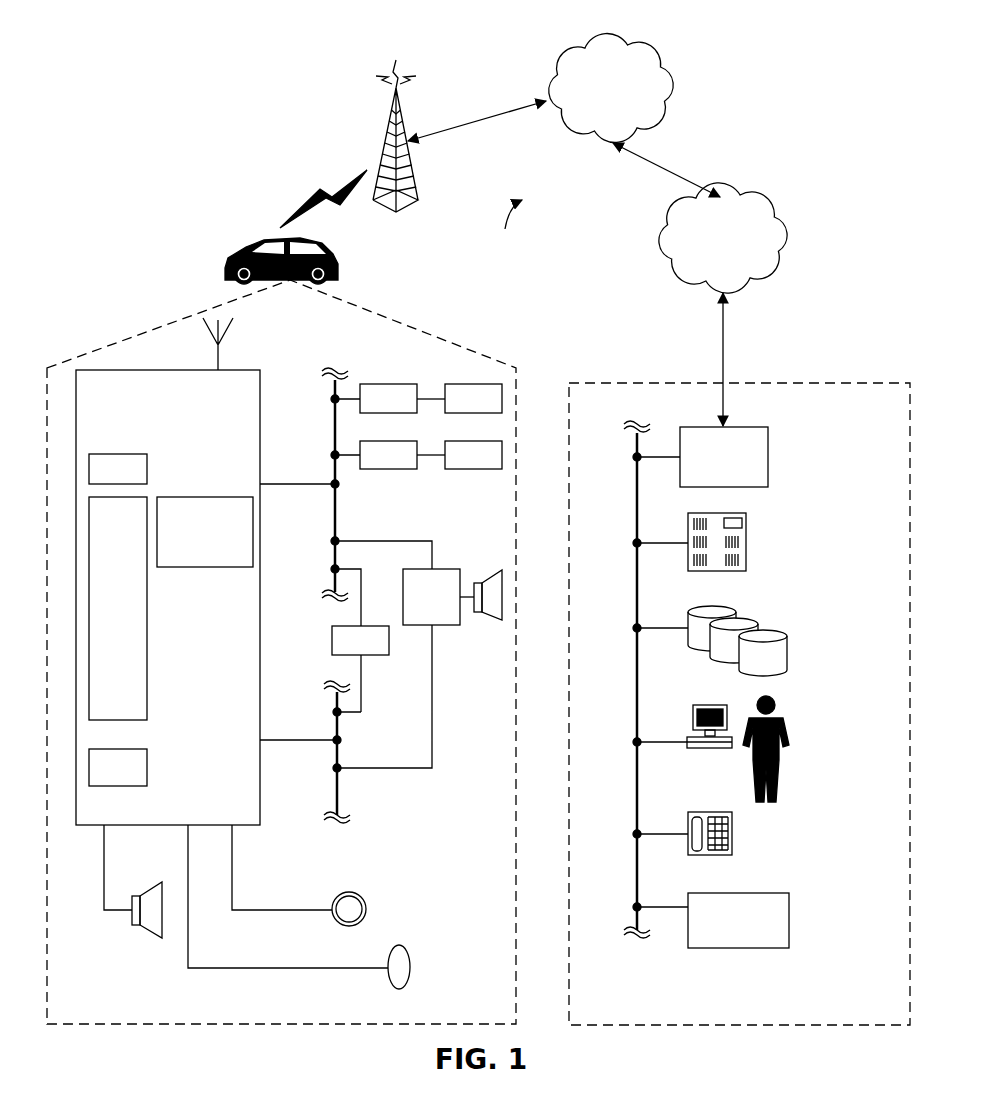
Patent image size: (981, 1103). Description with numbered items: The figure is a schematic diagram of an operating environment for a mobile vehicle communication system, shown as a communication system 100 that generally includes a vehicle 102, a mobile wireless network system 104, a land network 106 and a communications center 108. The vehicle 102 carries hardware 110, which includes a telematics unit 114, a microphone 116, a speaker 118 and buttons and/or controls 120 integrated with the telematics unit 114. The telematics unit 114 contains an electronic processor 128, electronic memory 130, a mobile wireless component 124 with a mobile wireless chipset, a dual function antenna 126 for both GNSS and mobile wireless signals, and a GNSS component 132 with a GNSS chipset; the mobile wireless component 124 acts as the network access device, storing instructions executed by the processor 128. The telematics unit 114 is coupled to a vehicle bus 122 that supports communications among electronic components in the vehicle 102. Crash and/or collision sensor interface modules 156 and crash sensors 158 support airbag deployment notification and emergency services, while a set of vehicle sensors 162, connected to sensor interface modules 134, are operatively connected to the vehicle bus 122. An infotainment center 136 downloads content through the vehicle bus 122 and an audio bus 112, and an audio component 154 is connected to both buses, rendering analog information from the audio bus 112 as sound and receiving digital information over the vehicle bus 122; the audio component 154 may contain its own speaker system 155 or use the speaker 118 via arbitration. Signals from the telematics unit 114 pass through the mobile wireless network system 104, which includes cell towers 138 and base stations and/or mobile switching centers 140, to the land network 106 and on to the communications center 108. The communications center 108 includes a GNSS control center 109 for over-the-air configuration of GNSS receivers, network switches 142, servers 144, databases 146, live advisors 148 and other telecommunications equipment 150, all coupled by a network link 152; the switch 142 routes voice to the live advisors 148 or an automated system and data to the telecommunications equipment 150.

The communication system 100 is at (415, 26).
The vehicle 102 is at (232, 256).
The mobile wireless network system 104 is at (401, 212).
The land network 106 is at (700, 284).
The communications center 108 is at (838, 989).
The GNSS control center 109 is at (738, 920).
The hardware 110 is at (437, 1017).
The audio bus 112 is at (333, 790).
The telematics unit 114 is at (203, 803).
The microphone 116 is at (401, 946).
The speaker 118 is at (146, 930).
The buttons and/or controls 120 is at (350, 892).
The vehicle bus 122 is at (340, 526).
The mobile wireless component 124 is at (118, 469).
The dual function antenna 126 is at (220, 362).
The electronic processor 128 is at (118, 608).
The electronic memory 130 is at (118, 767).
The GNSS component 132 is at (205, 532).
The sensor interface modules 134 is at (388, 455).
The infotainment center 136 is at (360, 669).
The cell towers 138 is at (400, 118).
The base stations and/or mobile switching centers 140 is at (611, 88).
The network switch 142 is at (724, 457).
The servers 144 is at (746, 535).
The databases 146 is at (788, 648).
The live advisors 148 is at (781, 715).
The telecommunications equipment 150 is at (732, 832).
The network link 152 is at (631, 682).
The audio component 154 is at (438, 597).
The speaker system 155 is at (490, 622).
The crash and/or collision sensor interface modules 156 is at (388, 398).
The crash sensors 158 is at (459, 398).
The vehicle sensors 162 is at (459, 455).